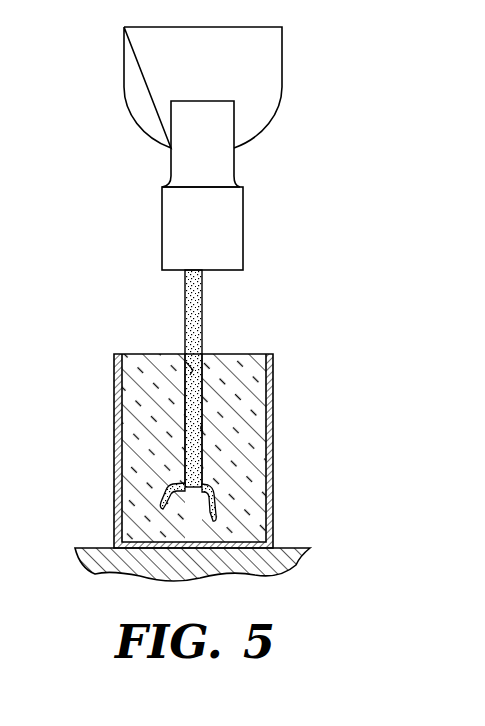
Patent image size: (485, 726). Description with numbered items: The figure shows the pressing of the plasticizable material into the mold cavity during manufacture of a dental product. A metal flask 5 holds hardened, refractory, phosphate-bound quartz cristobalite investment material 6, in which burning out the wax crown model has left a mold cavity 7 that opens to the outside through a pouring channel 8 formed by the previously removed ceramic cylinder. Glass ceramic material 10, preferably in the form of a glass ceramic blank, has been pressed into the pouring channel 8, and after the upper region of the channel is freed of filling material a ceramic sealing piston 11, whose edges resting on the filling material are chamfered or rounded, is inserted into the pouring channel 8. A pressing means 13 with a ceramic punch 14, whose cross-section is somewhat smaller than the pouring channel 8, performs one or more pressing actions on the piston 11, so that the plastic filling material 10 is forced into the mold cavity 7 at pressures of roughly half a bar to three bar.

The metal flask 5 is at (270, 489).
The investment material 6 is at (145, 443).
The mold cavity 7 is at (160, 510).
The pouring channel 8 is at (201, 422).
The glass ceramic material 10 is at (190, 395).
The ceramic sealing piston 11 is at (189, 368).
The pressing means 13 is at (246, 148).
The ceramic punch 14 is at (202, 297).